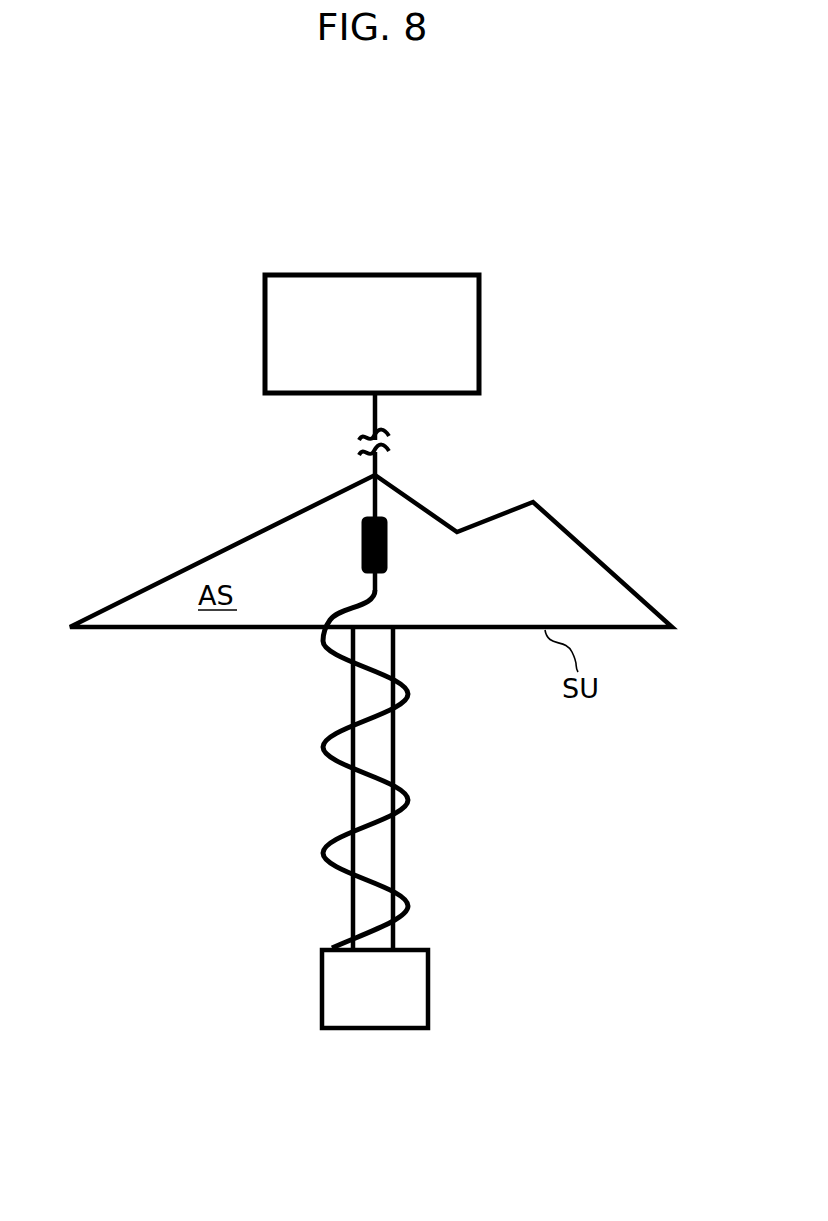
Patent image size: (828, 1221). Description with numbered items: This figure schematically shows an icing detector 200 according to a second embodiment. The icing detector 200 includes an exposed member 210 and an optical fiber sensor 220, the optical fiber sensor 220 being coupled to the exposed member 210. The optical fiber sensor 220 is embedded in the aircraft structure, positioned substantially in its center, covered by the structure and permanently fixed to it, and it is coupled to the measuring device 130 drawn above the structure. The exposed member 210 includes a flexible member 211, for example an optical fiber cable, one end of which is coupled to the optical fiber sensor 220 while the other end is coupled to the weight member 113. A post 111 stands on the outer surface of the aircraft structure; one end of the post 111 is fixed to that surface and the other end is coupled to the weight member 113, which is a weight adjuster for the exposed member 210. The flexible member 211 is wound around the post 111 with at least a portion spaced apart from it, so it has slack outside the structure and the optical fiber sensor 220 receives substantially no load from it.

The icing detector 200 is at (248, 216).
The measuring device 130 is at (481, 340).
The optical fiber sensor 220 is at (388, 540).
The exposed member 210 is at (293, 751).
The flexible member 211 is at (410, 793).
The post 111 is at (395, 853).
The weight member 113 is at (429, 983).